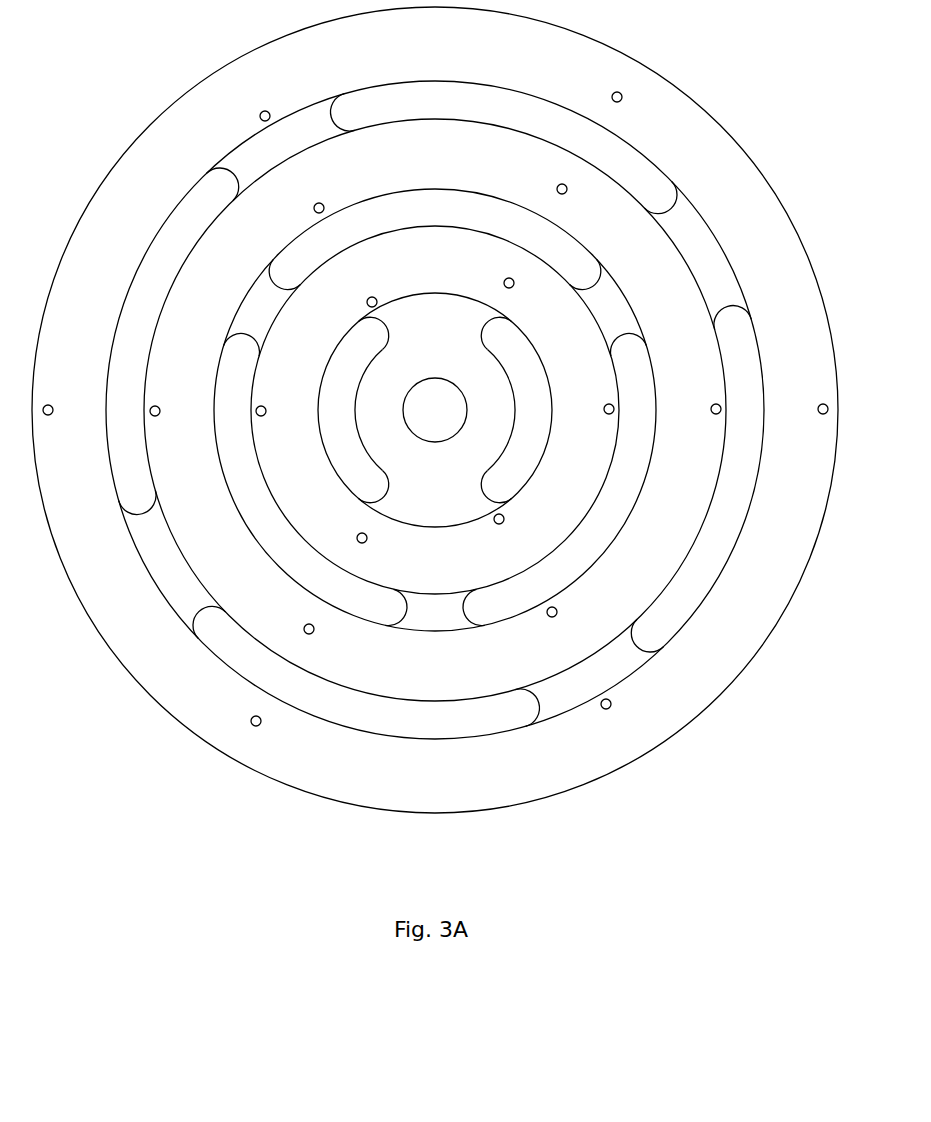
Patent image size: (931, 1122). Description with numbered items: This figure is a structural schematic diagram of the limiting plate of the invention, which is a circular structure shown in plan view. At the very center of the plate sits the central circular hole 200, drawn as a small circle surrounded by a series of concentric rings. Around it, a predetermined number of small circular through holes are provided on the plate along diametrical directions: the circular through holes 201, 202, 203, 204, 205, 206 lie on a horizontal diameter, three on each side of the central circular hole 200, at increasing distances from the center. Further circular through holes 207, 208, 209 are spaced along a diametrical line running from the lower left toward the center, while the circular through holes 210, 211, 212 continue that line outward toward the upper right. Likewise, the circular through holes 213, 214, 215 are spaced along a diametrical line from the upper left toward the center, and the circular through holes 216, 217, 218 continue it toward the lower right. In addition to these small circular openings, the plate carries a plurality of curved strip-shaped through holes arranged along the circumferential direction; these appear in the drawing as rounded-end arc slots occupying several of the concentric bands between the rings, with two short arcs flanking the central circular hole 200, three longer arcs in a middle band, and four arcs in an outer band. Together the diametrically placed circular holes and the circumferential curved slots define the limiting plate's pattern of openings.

The central circular hole 200 is at (435, 410).
The circular through hole 201 is at (50, 399).
The circular through hole 202 is at (163, 400).
The circular through hole 203 is at (268, 400).
The circular through hole 204 is at (600, 399).
The circular through hole 205 is at (714, 399).
The circular through hole 206 is at (819, 399).
The circular through hole 207 is at (241, 716).
The circular through hole 208 is at (294, 621).
The circular through hole 209 is at (347, 530).
The circular through hole 210 is at (527, 285).
The circular through hole 211 is at (579, 187).
The circular through hole 212 is at (633, 90).
The circular through hole 213 is at (275, 106).
The circular through hole 214 is at (330, 199).
The circular through hole 215 is at (384, 293).
The circular through hole 216 is at (510, 529).
The circular through hole 217 is at (563, 621).
The circular through hole 218 is at (617, 713).